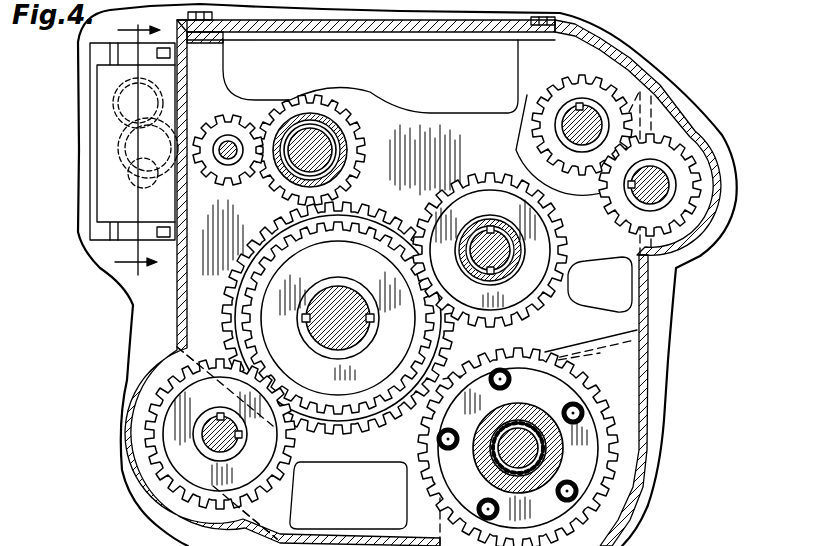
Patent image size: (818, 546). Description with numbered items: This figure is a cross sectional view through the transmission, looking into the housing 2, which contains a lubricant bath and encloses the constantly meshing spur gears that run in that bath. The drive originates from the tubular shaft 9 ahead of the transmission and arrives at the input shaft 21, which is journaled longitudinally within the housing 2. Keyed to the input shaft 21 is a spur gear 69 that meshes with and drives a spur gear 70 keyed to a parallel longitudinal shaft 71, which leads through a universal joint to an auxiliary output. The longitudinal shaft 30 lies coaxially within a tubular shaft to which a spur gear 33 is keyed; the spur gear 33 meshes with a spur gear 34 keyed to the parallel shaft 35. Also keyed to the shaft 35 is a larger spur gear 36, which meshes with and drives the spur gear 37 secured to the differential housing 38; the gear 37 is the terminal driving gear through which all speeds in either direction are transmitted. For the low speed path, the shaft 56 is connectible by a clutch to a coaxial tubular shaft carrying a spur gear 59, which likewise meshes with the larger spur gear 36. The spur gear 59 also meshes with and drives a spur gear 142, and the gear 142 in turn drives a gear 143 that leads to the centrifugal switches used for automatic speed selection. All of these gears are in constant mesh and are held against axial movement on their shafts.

The housing 2 is at (178, 295).
The tubular shaft 9 is at (146, 148).
The input shaft 21 is at (578, 120).
The longitudinal shaft 30 is at (496, 249).
The spur gear 33 is at (478, 174).
The spur gear 34 is at (374, 224).
The shaft 35 is at (345, 300).
The larger spur gear 36 is at (240, 280).
The spur gear 37 is at (598, 398).
The differential housing 38 is at (520, 410).
The shaft 56 is at (306, 145).
The spur gear 59 is at (330, 106).
The spur gear 69 is at (598, 82).
The spur gear 70 is at (692, 160).
The shaft 71 is at (662, 185).
The spur gear 142 is at (231, 117).
The gear 143 is at (140, 153).